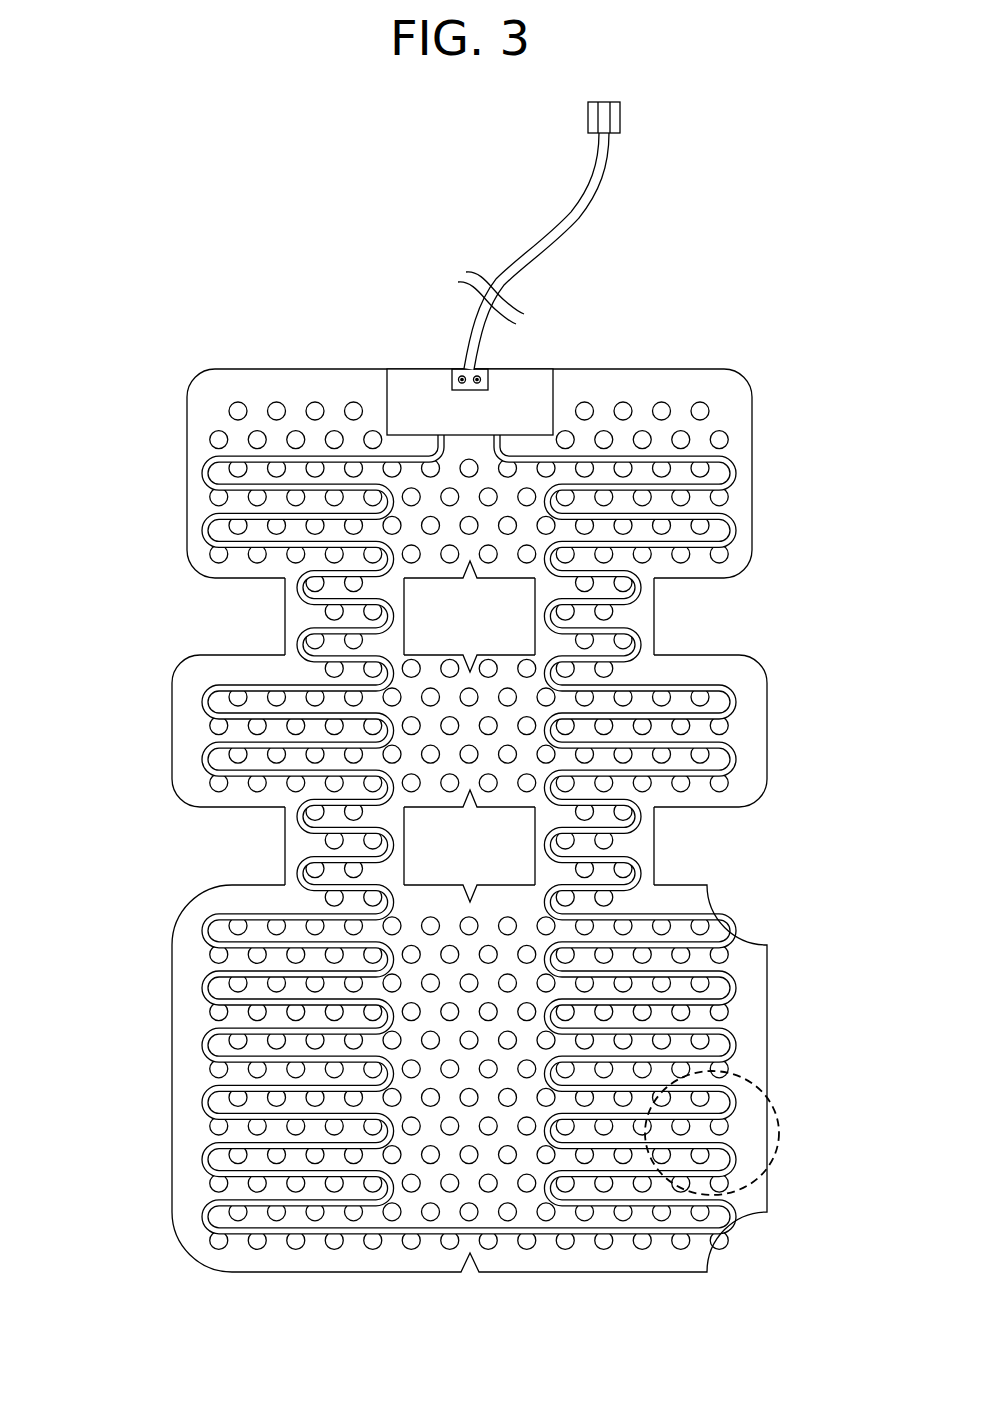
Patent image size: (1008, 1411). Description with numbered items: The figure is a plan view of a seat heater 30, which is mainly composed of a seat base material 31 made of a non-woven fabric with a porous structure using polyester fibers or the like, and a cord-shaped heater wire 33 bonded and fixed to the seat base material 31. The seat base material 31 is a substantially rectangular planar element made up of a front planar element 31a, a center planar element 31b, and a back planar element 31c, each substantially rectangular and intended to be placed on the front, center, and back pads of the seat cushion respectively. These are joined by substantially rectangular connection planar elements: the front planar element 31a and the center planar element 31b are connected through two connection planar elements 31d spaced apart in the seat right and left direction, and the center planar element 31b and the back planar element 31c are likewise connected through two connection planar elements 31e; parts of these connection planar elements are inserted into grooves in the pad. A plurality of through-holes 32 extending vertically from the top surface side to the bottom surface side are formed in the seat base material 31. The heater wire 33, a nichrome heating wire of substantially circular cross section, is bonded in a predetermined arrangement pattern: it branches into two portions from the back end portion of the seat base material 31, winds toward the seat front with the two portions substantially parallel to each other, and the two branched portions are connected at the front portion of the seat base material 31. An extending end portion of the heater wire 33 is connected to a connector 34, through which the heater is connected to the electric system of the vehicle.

The seat heater 30 is at (461, 687).
The seat base material 31 is at (474, 797).
The front planar element 31a is at (755, 1022).
The center planar element 31b is at (750, 735).
The back planar element 31c is at (738, 508).
The connection planar element 31d is at (640, 847).
The connection planar element 31e is at (640, 618).
The through-hole 32 is at (316, 402).
The heater wire 33 is at (258, 685).
The connector 34 is at (622, 118).